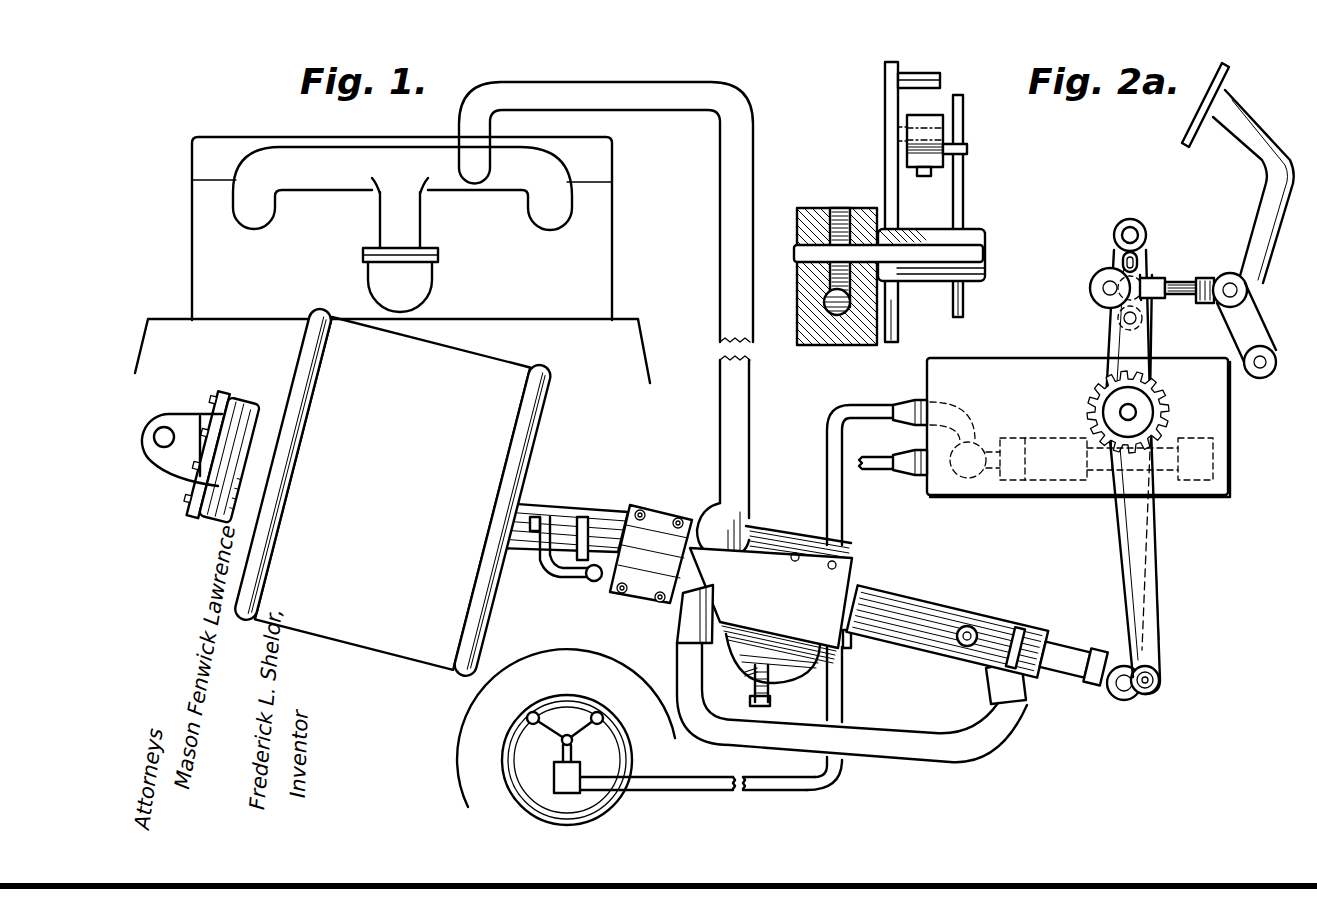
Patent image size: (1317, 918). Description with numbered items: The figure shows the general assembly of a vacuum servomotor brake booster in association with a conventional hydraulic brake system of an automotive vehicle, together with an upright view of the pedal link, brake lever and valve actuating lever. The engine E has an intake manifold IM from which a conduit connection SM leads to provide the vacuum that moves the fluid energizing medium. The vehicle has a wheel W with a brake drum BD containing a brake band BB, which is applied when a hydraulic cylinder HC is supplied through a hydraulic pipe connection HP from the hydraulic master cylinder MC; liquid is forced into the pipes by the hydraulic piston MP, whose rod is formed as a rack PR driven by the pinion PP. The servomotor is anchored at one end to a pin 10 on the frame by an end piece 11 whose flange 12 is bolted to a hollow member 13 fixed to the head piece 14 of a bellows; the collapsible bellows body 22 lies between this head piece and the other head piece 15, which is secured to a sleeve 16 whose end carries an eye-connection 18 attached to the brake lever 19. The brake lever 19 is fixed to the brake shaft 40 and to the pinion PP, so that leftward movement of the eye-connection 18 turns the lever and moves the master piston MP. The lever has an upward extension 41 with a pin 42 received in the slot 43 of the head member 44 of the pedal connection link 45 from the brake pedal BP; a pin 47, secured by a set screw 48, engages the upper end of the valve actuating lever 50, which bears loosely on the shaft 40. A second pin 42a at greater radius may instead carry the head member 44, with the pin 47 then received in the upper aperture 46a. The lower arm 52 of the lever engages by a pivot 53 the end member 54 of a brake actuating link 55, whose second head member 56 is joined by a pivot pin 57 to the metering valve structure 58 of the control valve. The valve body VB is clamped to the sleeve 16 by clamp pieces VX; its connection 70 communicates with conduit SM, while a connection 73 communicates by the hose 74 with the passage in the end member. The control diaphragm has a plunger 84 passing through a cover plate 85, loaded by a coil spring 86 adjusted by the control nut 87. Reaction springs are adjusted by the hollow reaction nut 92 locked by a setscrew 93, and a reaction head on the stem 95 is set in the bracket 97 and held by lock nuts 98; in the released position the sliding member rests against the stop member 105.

In FIG. 1, the pin 10 is at (165, 427).
In FIG. 1, the end piece 11 is at (180, 412).
In FIG. 1, the flange 12 is at (232, 385).
In FIG. 1, the hollow member 13 is at (245, 395).
In FIG. 1, the head piece 14 is at (247, 550).
In FIG. 1, the head piece 15 is at (552, 398).
In FIG. 1, the sleeve 16 is at (930, 592).
In FIG. 1, the eye-connection 18 is at (1125, 700).
In FIG. 1, the brake lever 19 is at (1112, 565).
In FIG. 2A, the brake lever 19 is at (893, 318).
In FIG. 1, the vacuum tank / cylinder 22 is at (392, 493).
In FIG. 1, the brake shaft 40 is at (1135, 405).
In FIG. 2A, the brake shaft 40 is at (863, 247).
In FIG. 1, the upward extension 41 is at (1112, 336).
In FIG. 2A, the upward extension 41 is at (885, 160).
In FIG. 1, the pin 42 is at (1117, 275).
In FIG. 2A, the pin 42 is at (905, 133).
In FIG. 1, the second pin 42a is at (1128, 228).
In FIG. 2A, the second pin 42a is at (935, 76).
In FIG. 1, the slot 43 is at (1095, 288).
In FIG. 1, the head member 44 is at (1150, 285).
In FIG. 2A, the head member 44 is at (942, 125).
In FIG. 1, the pedal connection link 45 is at (1192, 283).
In FIG. 1, the upper aperture 46a is at (1148, 243).
In FIG. 1, the pin 47 is at (1118, 318).
In FIG. 2A, the pin 47 is at (967, 150).
In FIG. 2A, the set screw 48 is at (922, 176).
In FIG. 1, the valve actuating lever 50 is at (1152, 340).
In FIG. 2A, the valve actuating lever 50 is at (962, 200).
In FIG. 1, the lower arm 52 is at (1160, 590).
In FIG. 2A, the lower arm 52 is at (963, 300).
In FIG. 1, the pivot 53 is at (1160, 686).
In FIG. 1, the end member 54 is at (1098, 680).
In FIG. 1, the brake actuating link 55 is at (1053, 663).
In FIG. 1, the second head member 56 is at (993, 638).
In FIG. 1, the pivot pin 57 is at (968, 625).
In FIG. 1, the metering valve structure 58 is at (873, 608).
In FIG. 1, the connection 70 is at (750, 516).
In FIG. 1, the connection 73 is at (683, 624).
In FIG. 1, the hose 74 is at (923, 758).
In FIG. 1, the plunger 84 is at (770, 688).
In FIG. 1, the cover plate 85 is at (812, 680).
In FIG. 1, the coil spring 86 is at (757, 675).
In FIG. 1, the control nut 87 is at (771, 702).
In FIG. 1, the hollow reaction nut 92 is at (582, 517).
In FIG. 1, the setscrew 93 is at (602, 517).
In FIG. 1, the stem 95 is at (545, 560).
In FIG. 1, the bracket 97 is at (580, 577).
In FIG. 1, the lock nuts 98 is at (538, 517).
In FIG. 1, the stop member 105 is at (851, 640).
In FIG. 1, the engine E is at (402, 228).
In FIG. 1, the intake manifold IM is at (508, 182).
In FIG. 1, the conduit connection SM is at (750, 103).
In FIG. 1, the clamp pieces VX is at (648, 540).
In FIG. 1, the valve body VB is at (771, 605).
In FIG. 1, the hydraulic master cylinder MC is at (953, 356).
In FIG. 2A, the hydraulic master cylinder MC is at (800, 212).
In FIG. 1, the pinion PP is at (1088, 418).
In FIG. 2A, the pinion PP is at (838, 215).
In FIG. 1, the rack PR is at (1168, 480).
In FIG. 2A, the rack PR is at (825, 305).
In FIG. 1, the hydraulic piston MP is at (1052, 475).
In FIG. 1, the hydraulic pipe connection HP is at (874, 462).
In FIG. 1, the wheel W is at (462, 714).
In FIG. 1, the brake drum BD is at (569, 707).
In FIG. 1, the brake band BB is at (622, 762).
In FIG. 1, the hydraulic cylinder HC is at (555, 778).
In FIG. 1, the brake pedal BP is at (1260, 167).